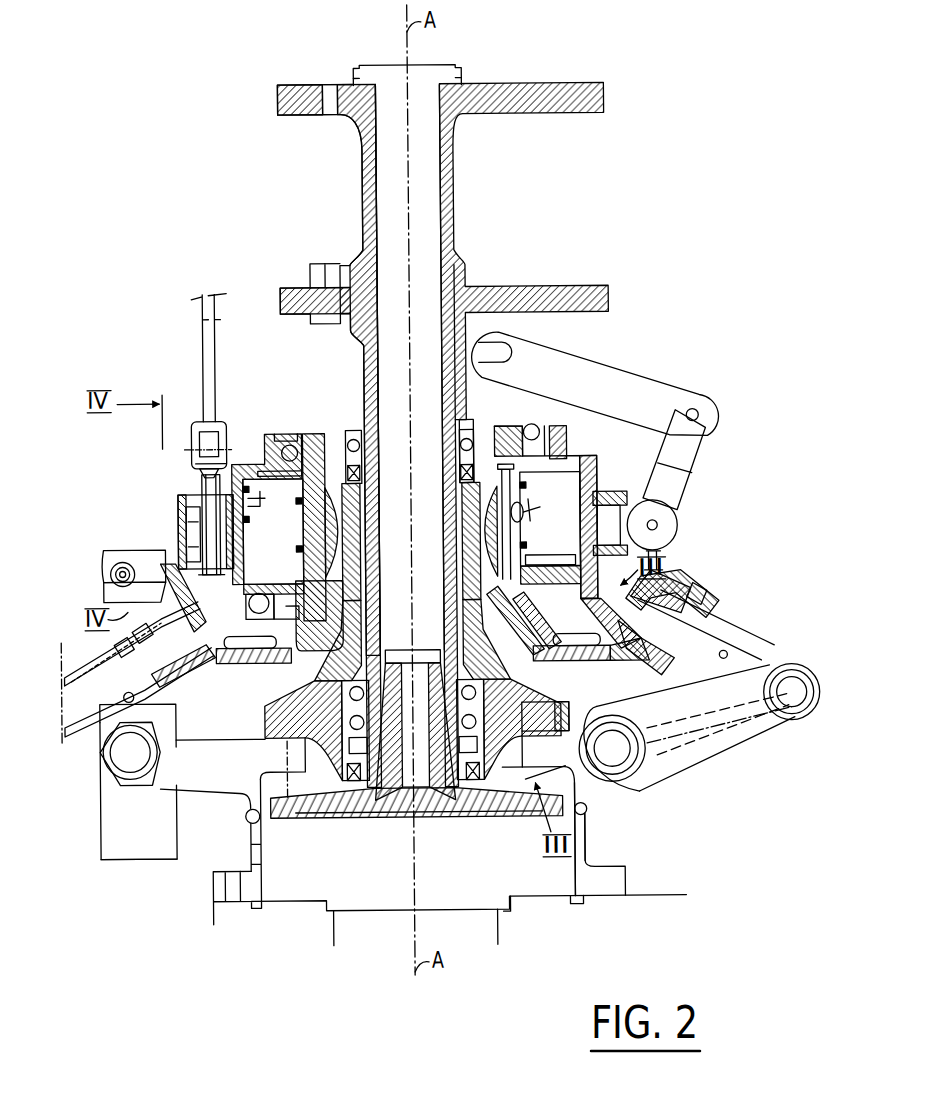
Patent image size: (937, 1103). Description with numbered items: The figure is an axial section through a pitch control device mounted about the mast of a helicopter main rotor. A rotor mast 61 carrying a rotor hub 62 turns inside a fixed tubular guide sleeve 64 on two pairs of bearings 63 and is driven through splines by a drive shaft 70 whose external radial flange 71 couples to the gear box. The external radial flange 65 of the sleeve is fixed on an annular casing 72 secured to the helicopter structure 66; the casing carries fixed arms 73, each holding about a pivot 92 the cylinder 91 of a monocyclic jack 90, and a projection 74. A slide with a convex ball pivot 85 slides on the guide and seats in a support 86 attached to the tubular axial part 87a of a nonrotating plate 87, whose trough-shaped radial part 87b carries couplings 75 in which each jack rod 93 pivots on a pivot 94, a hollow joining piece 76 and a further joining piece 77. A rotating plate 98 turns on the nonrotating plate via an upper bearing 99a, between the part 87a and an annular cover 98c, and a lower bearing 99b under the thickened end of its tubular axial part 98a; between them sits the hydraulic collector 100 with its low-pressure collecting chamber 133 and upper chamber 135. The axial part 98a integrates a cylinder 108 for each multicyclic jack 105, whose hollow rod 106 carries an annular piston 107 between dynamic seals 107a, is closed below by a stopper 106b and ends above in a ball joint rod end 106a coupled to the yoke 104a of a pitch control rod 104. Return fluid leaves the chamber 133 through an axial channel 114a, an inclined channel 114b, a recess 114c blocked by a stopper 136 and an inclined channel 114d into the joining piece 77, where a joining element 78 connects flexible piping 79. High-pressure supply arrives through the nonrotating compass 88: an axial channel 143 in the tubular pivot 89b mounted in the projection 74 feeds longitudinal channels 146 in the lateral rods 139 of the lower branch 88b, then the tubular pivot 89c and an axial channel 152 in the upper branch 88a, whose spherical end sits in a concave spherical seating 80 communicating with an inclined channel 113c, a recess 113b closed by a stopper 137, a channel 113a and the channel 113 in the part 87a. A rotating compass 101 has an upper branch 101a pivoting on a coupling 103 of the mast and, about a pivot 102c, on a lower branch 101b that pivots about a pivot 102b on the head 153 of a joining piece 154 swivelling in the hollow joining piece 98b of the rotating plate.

The rotor mast 61 is at (450, 408).
The rotor hub 62 is at (448, 186).
The bearings 63 is at (447, 456).
The guide sleeve 64 is at (467, 577).
The external radial flange 65 is at (262, 717).
The structure 66 is at (303, 923).
The drive shaft 70 is at (433, 753).
The external radial flange 71 is at (483, 800).
The annular casing 72 is at (570, 860).
The fixed arms 73 is at (213, 777).
The projection 74 is at (578, 780).
The rigid radial couplings 75 is at (117, 557).
The hollow cylindrical joining piece 76 is at (687, 582).
The hollow cylindrical joining piece 77 is at (173, 687).
The joining element 78 is at (147, 637).
The flexible piping 79 is at (73, 727).
The concave spherical seating 80 is at (712, 608).
The slide with convex ball pivot 85 is at (470, 530).
The support 86 is at (345, 503).
The nonrotating plate 87 is at (675, 568).
The tubular axial part 87a is at (313, 430).
The radial part (trough part) 87b is at (540, 645).
The nonrotating compass 88 is at (800, 660).
The upper branch 88a is at (740, 653).
The lower branch 88b is at (753, 747).
The tubular pivot 89b is at (621, 775).
The tubular pivot 89c is at (790, 718).
The monocyclic jacks 90 is at (152, 864).
The cylinder 91 is at (112, 838).
The pivot 92 is at (120, 762).
The rod 93 is at (110, 645).
The pivot 94 is at (123, 570).
The rotating plate 98 is at (594, 446).
The tubular axial part (annular casing) 98a is at (242, 467).
The hollow tubular joining piece 98b is at (603, 497).
The annular cover 98c is at (267, 427).
The upper bearing 99a is at (532, 428).
The lower bearing 99b is at (522, 515).
The hydraulic collector 100 is at (567, 487).
The rotating compass 101 is at (621, 337).
The upper branch 101a is at (536, 333).
The lower branch 101b is at (690, 446).
The pivot 102b is at (660, 528).
The pivot 102c is at (694, 410).
The coupling 103 is at (490, 342).
The pitch control rod 104 is at (203, 318).
The yoke 104a is at (197, 463).
The multicyclic jacks 105 is at (167, 490).
The rod 106 is at (197, 482).
The ball joint rod end 106a is at (207, 430).
The stopper 106b is at (123, 583).
The annular piston 107 is at (190, 537).
The dynamic seals 107a is at (240, 533).
The cylinder 108 is at (187, 515).
The channel 113 is at (507, 480).
The channel 113a is at (517, 603).
The recess 113b is at (578, 667).
The inclined channel 113c is at (642, 660).
The axial channel 114a is at (290, 593).
The inclined channel 114b is at (292, 648).
The recess 114c is at (253, 660).
The inclined channel 114d is at (217, 670).
The low-pressure collecting chamber 133 is at (560, 548).
The upper chamber 135 is at (575, 460).
The leakproof stopper 136 is at (200, 657).
The leakproof stopper 137 is at (557, 660).
The lateral rods 139 is at (670, 760).
The axial channel 143 is at (610, 757).
The longitudinal channels 146 is at (702, 757).
The axial channel 152 is at (722, 657).
The head 153 is at (664, 513).
The joining piece 154 is at (664, 557).